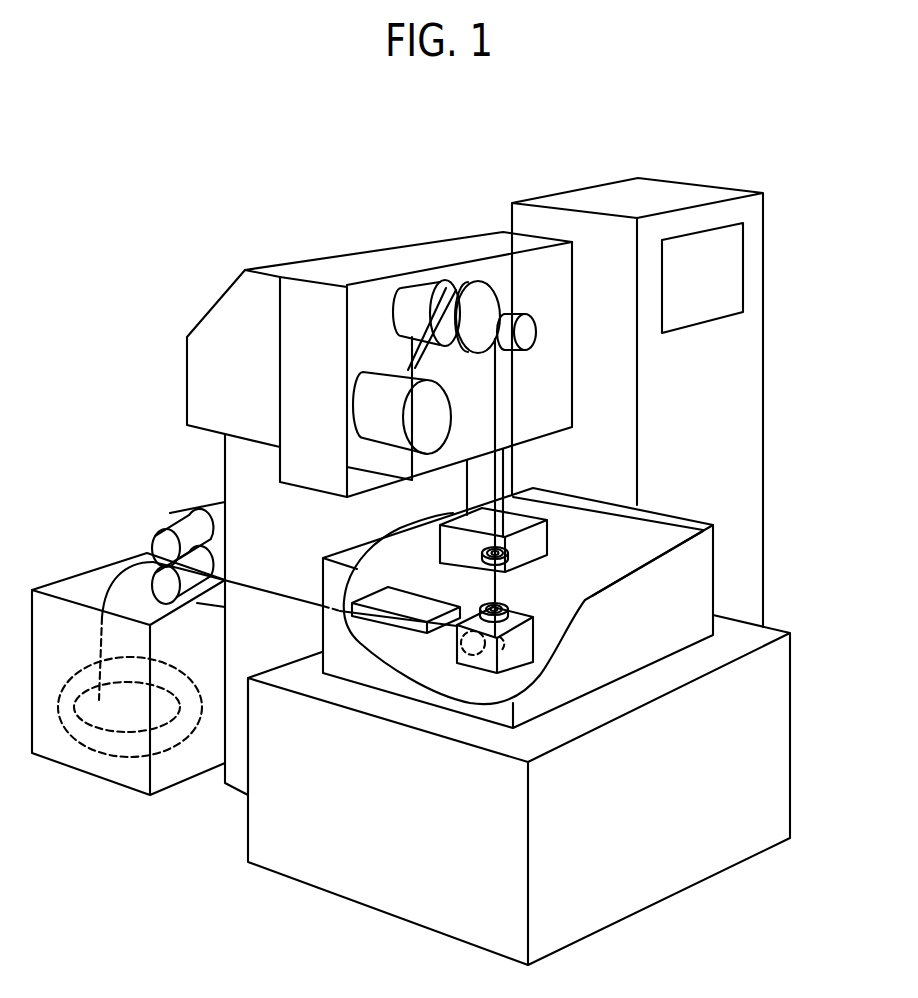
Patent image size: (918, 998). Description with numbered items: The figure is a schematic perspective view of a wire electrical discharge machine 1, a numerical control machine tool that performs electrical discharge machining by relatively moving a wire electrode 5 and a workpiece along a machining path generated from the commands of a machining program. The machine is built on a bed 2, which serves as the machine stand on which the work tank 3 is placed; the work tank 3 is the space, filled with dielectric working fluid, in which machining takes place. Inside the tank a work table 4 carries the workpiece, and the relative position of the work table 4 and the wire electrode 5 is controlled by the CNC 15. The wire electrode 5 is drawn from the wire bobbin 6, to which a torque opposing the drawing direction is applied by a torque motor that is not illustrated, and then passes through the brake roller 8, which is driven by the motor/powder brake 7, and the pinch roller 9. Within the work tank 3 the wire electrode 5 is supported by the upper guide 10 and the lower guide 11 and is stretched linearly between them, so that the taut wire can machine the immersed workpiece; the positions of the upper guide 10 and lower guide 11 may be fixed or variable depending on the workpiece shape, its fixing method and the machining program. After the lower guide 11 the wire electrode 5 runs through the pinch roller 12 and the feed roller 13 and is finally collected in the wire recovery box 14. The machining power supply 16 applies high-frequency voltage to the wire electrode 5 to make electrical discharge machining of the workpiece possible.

The wire electrical discharge machine 1 is at (553, 149).
The bed 2 is at (777, 723).
The work tank 3 is at (688, 567).
The work table 4 is at (415, 603).
The wire electrode 5 is at (497, 580).
The wire bobbin 6 is at (422, 415).
The motor/powder brake 7 is at (425, 280).
The brake roller 8 is at (460, 280).
The pinch roller 9 is at (535, 325).
The upper guide 10 is at (537, 542).
The lower guide 11 is at (530, 645).
The pinch roller 12 is at (195, 532).
The feed roller 13 is at (203, 583).
The wire recovery box 14 is at (67, 583).
The CNC (numerical control device) 15 is at (745, 290).
The machining power supply 16 is at (679, 193).